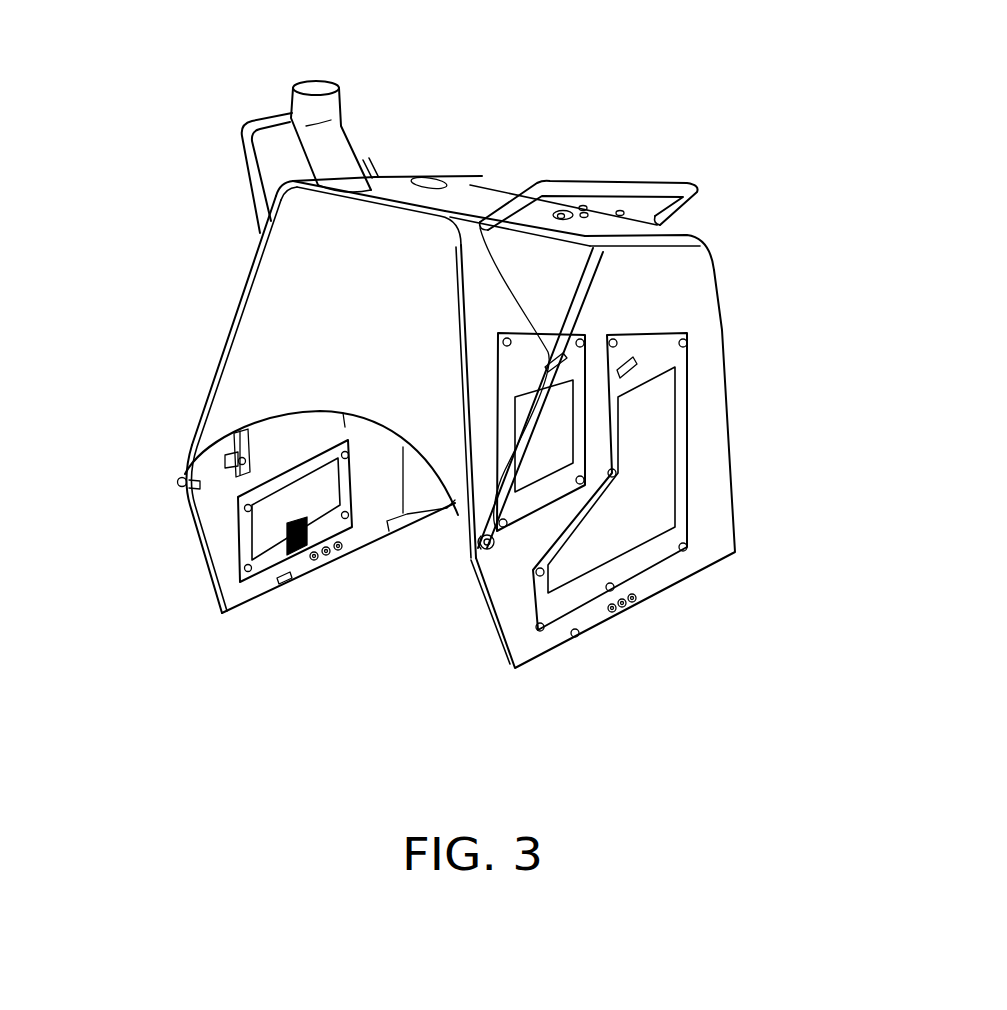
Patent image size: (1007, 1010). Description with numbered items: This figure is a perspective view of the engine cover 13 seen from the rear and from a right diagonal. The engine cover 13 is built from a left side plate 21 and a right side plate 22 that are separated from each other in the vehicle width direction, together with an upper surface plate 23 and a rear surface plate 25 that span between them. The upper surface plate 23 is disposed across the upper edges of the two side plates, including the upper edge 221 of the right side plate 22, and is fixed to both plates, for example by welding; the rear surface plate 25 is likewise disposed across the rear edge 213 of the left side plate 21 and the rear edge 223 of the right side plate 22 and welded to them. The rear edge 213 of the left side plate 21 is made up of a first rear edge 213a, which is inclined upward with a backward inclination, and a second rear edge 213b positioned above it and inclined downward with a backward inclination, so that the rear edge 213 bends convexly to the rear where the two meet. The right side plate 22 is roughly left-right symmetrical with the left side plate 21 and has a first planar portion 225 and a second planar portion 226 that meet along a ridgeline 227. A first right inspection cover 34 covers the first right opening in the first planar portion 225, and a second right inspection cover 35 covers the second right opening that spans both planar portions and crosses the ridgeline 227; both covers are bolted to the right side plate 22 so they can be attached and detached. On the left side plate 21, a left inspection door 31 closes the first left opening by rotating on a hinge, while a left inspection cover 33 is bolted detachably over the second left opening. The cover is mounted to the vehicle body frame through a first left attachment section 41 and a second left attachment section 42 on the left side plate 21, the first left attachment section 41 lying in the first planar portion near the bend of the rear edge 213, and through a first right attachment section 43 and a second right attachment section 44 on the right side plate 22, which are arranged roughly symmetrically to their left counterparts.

The engine cover 13 is at (590, 95).
The left side plate 21 is at (207, 507).
The right side plate 22 is at (718, 452).
The upper surface plate 23 is at (437, 203).
The rear surface plate 25 is at (313, 295).
The left inspection door 31 is at (262, 442).
The left inspection cover 33 is at (262, 543).
The first right inspection cover 34 is at (638, 528).
The second right inspection cover 35 is at (540, 437).
The first left attachment section 41 is at (168, 483).
The second left attachment section 42 is at (319, 578).
The first right attachment section 43 is at (468, 565).
The second right attachment section 44 is at (618, 628).
The rear edge 213 is at (187, 439).
The first rear edge 213a is at (198, 547).
The second rear edge 213b is at (230, 327).
The upper edge 221 is at (608, 228).
The rear edge 223 is at (460, 322).
The first planar portion 225 is at (702, 309).
The second planar portion 226 is at (521, 267).
The ridgeline 227 is at (480, 226).